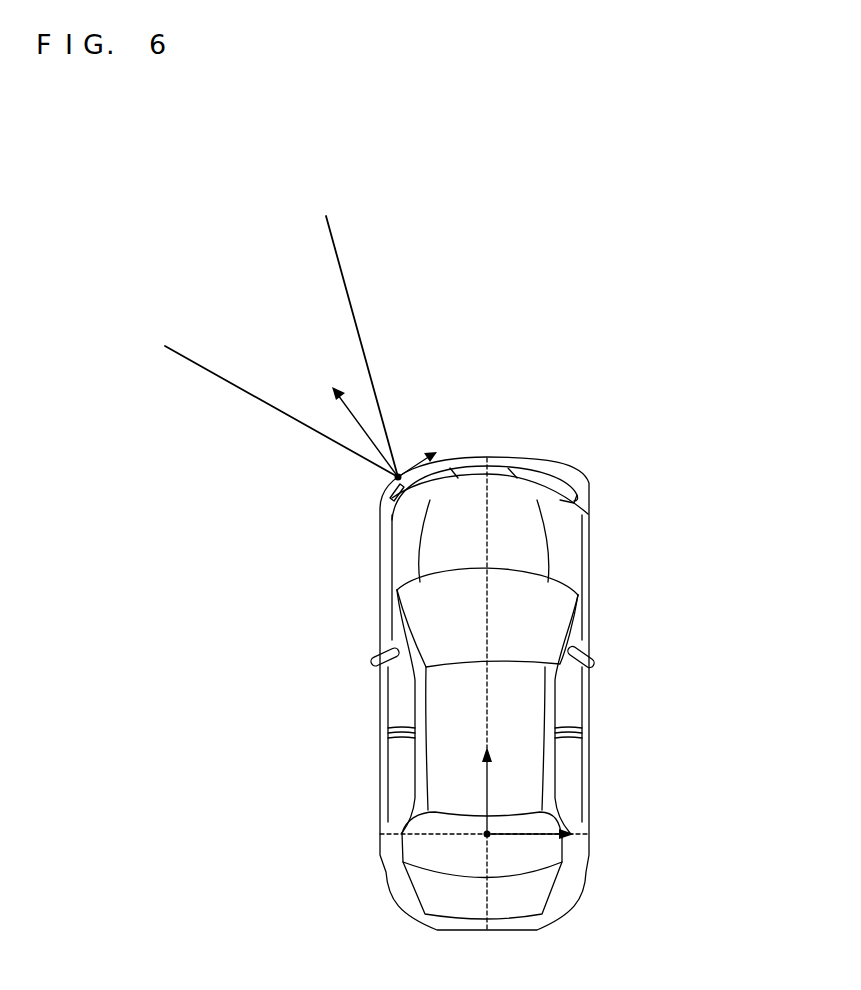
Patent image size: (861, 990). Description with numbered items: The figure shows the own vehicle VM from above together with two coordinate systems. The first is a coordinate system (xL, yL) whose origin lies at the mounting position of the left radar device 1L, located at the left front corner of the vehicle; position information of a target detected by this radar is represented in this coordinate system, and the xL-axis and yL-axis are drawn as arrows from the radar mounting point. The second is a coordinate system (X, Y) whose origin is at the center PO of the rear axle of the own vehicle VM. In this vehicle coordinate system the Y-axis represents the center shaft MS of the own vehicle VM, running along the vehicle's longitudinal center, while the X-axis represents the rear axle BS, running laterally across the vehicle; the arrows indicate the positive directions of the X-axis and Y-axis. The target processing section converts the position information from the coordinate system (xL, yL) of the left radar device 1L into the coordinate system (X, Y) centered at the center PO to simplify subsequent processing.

The left radar device 1L is at (284, 408).
The yL-axis of the left radar device coordinate system yL is at (365, 422).
The xL-axis of the left radar device coordinate system xL is at (423, 453).
The center shaft MS is at (587, 694).
The own vehicle VM is at (560, 693).
The center of the rear axle PO is at (564, 793).
The rear axle BS is at (420, 812).